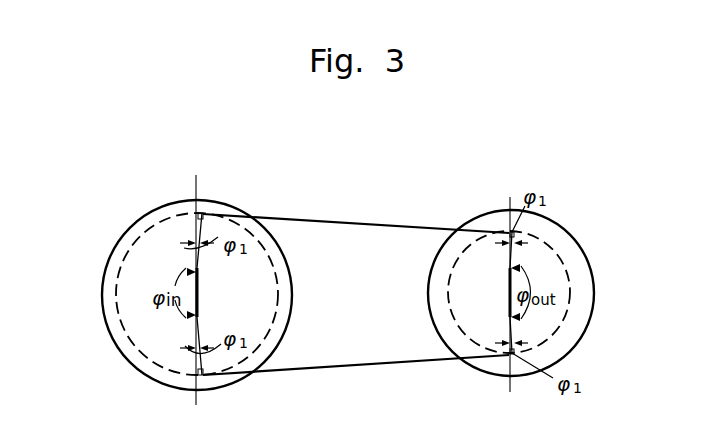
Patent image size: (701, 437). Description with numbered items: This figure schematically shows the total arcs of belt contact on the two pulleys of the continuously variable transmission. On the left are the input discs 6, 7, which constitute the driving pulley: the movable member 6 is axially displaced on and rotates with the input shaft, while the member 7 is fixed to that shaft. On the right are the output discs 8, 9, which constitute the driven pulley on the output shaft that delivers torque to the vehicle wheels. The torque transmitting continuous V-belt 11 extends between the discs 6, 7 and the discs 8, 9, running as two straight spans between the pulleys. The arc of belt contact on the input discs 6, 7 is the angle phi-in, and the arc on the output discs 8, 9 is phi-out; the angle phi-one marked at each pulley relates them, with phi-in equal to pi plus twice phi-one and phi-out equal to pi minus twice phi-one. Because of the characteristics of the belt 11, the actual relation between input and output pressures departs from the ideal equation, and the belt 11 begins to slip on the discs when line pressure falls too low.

The movable member of input discs 6 is at (105, 263).
The fixed member of input discs 7 is at (105, 263).
The output disc 8 is at (578, 242).
The output disc 9 is at (578, 242).
The V-belt 11 is at (332, 220).